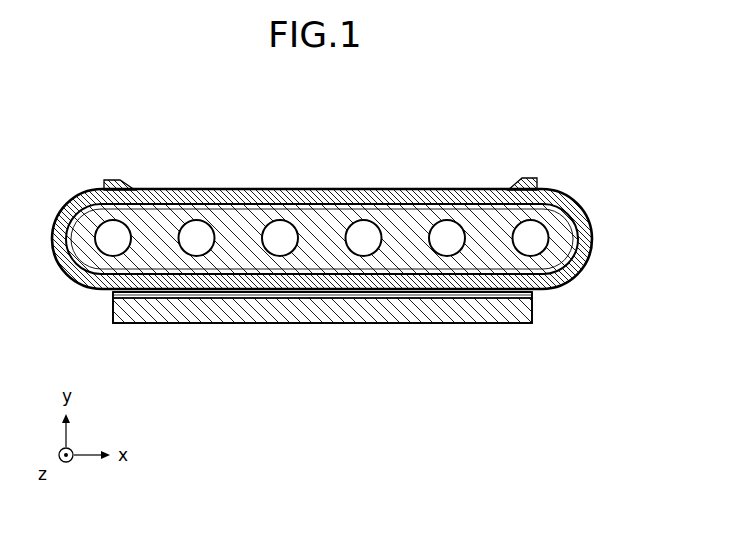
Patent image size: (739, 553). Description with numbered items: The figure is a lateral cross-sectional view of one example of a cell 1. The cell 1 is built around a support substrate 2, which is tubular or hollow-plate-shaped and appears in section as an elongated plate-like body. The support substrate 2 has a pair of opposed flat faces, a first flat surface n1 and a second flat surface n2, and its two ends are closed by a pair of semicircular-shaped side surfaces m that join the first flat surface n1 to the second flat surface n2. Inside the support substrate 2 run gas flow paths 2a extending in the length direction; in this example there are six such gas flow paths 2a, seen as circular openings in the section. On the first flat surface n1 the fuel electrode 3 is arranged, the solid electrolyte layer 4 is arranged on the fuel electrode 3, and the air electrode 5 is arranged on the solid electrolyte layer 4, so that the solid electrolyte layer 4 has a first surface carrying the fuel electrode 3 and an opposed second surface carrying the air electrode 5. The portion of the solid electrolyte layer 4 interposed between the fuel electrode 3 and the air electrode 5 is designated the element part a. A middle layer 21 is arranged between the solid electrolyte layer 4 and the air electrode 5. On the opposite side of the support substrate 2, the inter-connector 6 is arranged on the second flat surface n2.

The cell 1 is at (567, 156).
The support substrate 2 is at (208, 270).
The gas flow paths 2a is at (204, 237).
The inter-connector 6 is at (313, 200).
The second flat surface n2 is at (400, 205).
The first flat surface n1 is at (283, 282).
The side surfaces m is at (52, 240).
The element part a is at (408, 388).
The middle layer 21 is at (375, 300).
The air electrode 5 is at (443, 308).
The solid electrolyte layer 4 is at (481, 296).
The fuel electrode 3 is at (523, 292).